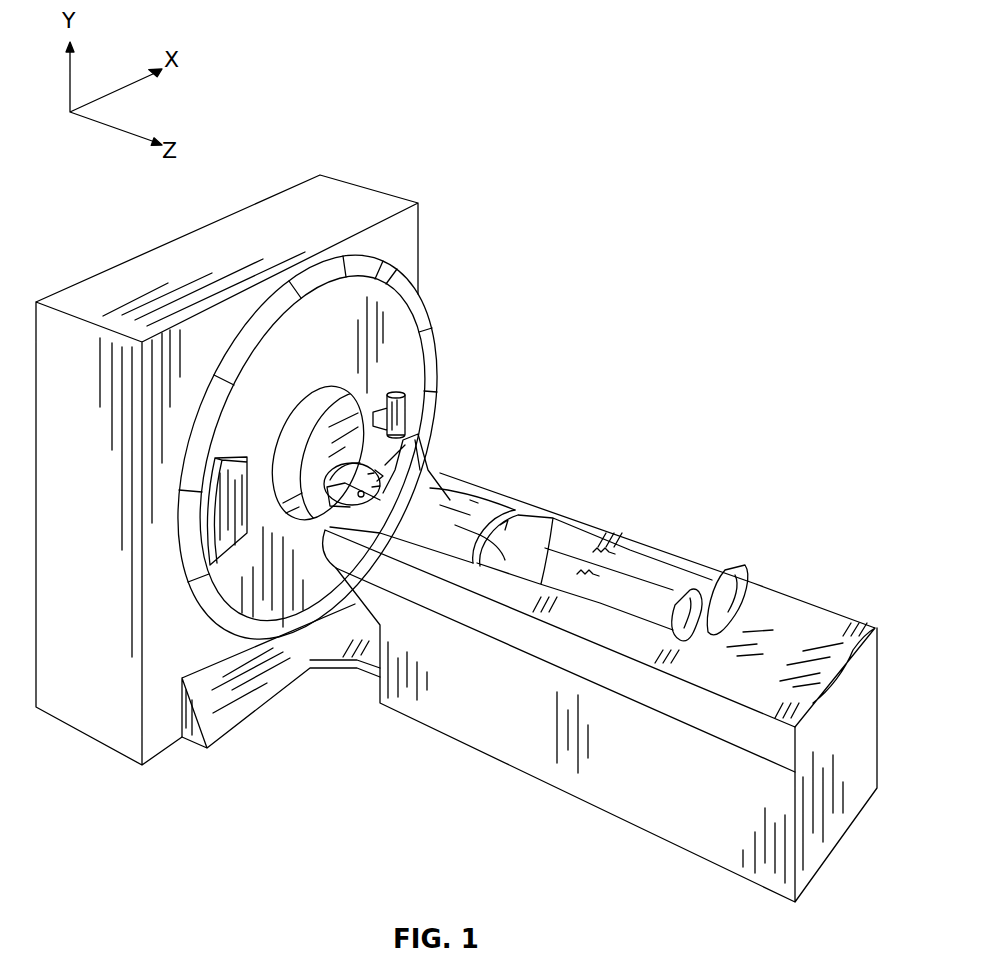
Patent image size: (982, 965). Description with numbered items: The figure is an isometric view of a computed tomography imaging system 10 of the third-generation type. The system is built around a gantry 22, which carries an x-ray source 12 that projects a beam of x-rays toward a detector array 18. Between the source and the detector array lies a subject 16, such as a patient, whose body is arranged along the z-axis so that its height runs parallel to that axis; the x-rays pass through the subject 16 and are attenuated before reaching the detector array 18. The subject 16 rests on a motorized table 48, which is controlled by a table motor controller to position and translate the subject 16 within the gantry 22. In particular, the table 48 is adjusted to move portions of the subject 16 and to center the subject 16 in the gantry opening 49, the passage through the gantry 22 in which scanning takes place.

The computed tomography (CT) imaging system 10 is at (606, 311).
The x-ray source 12 is at (407, 413).
The subject 16 is at (477, 497).
The detector array 18 is at (230, 547).
The gantry 22 is at (150, 248).
The motorized table 48 is at (485, 713).
The gantry opening 49 is at (293, 418).